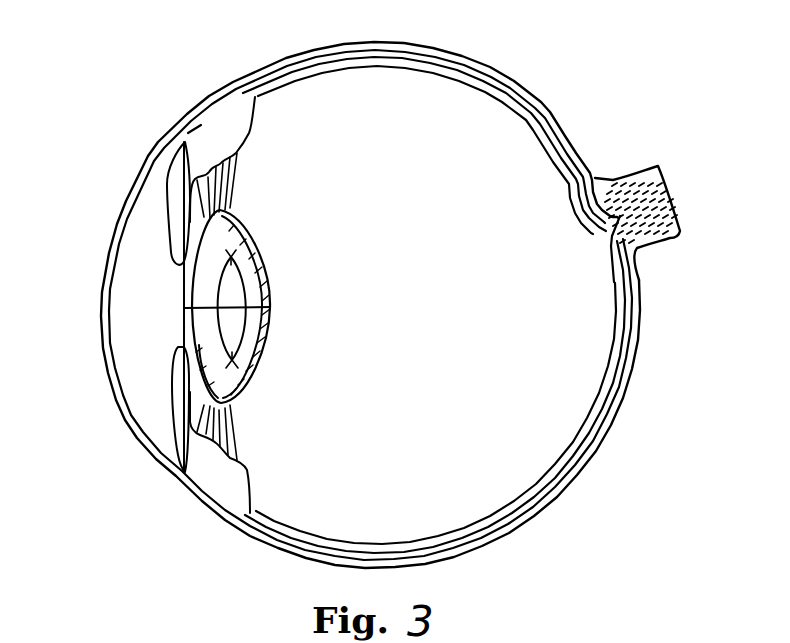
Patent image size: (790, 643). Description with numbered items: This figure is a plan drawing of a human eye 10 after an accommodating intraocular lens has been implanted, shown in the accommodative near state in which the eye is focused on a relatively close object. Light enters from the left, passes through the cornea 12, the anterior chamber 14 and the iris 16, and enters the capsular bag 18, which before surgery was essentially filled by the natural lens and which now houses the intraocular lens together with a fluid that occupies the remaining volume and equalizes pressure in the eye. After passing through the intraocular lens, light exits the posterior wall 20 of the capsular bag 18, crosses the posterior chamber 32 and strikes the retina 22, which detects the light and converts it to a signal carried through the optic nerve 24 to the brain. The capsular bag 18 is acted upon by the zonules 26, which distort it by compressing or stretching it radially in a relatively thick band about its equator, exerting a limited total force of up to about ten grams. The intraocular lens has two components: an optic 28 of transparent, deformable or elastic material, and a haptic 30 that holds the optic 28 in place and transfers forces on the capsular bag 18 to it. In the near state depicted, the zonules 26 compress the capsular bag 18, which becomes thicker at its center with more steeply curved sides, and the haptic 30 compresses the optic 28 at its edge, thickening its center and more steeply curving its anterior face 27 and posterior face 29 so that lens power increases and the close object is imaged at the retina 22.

The human eye 10 is at (146, 96).
The cornea 12 is at (107, 260).
The anterior chamber 14 is at (143, 212).
The iris 16 is at (180, 210).
The capsular bag 18 is at (259, 250).
The posterior wall 20 is at (241, 231).
The retina 22 is at (590, 178).
The optic nerve 24 is at (643, 183).
The zonules 26 is at (247, 175).
The anterior face 27 is at (184, 308).
The optic 28 is at (236, 296).
The posterior face 29 is at (255, 309).
The haptic 30 is at (224, 370).
The posterior chamber 32 is at (500, 130).